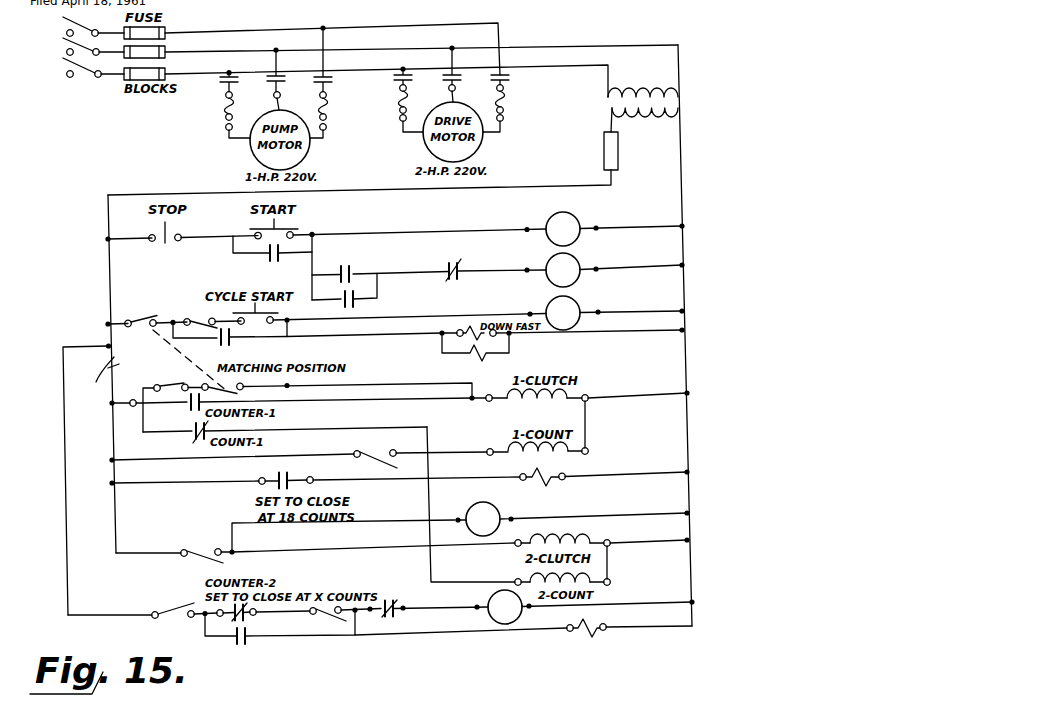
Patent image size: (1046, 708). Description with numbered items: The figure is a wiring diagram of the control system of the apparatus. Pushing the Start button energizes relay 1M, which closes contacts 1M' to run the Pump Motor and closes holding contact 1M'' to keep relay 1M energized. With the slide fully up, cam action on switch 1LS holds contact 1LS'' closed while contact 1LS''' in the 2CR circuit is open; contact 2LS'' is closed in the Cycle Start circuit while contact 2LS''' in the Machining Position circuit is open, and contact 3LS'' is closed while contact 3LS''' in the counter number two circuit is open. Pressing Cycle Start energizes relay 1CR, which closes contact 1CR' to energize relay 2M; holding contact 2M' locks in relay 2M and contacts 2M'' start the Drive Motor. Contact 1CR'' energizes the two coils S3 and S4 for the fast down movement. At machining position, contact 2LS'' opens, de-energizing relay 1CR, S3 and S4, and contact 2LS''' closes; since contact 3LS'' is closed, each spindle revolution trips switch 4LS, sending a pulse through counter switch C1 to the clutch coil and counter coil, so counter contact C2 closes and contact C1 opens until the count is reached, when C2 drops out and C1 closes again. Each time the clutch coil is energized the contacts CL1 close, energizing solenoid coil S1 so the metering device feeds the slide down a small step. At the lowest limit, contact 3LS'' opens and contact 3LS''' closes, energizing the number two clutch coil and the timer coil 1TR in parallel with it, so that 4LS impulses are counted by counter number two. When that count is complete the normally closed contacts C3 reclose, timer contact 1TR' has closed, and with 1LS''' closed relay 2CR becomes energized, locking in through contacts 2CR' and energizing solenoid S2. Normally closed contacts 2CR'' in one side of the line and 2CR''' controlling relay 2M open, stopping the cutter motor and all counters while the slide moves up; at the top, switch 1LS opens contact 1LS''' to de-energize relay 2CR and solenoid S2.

The pump motor contacts 1M' is at (258, 64).
The drive motor contacts 2M'' is at (468, 74).
The pump motor relay 1M is at (563, 229).
The holding contact 1M'' is at (272, 258).
The drive motor relay 2M is at (563, 270).
The holding contact 2M' is at (348, 299).
The control relay 1CR is at (563, 313).
The relay contact 1CR' is at (400, 440).
The relay contact 1CR'' is at (230, 342).
The control relay 2CR is at (505, 607).
The locking contact 2CR' is at (280, 639).
The normally closed contact 2CR'' is at (95, 385).
The normally closed contact 2CR''' is at (496, 266).
The timer coil 1TR is at (483, 519).
The timer contact 1TR' is at (332, 635).
The limit switch contact 1LS'' is at (196, 315).
The limit switch contact 1LS''' is at (154, 602).
The limit switch contact 2LS'' is at (143, 310).
The limit switch contact 2LS''' is at (245, 395).
The limit switch contact 3LS'' is at (159, 379).
The limit switch contact 3LS''' is at (203, 540).
The spindle limit switch 4LS is at (374, 455).
The counter contact C1 is at (194, 438).
The counter contact C2 is at (190, 408).
The counter contacts C3 is at (247, 619).
The clutch contacts CL1 is at (279, 474).
The solenoid coil S1 is at (547, 481).
The solenoid S2 is at (592, 630).
The solenoid coil S3 is at (471, 330).
The solenoid coil S4 is at (474, 358).